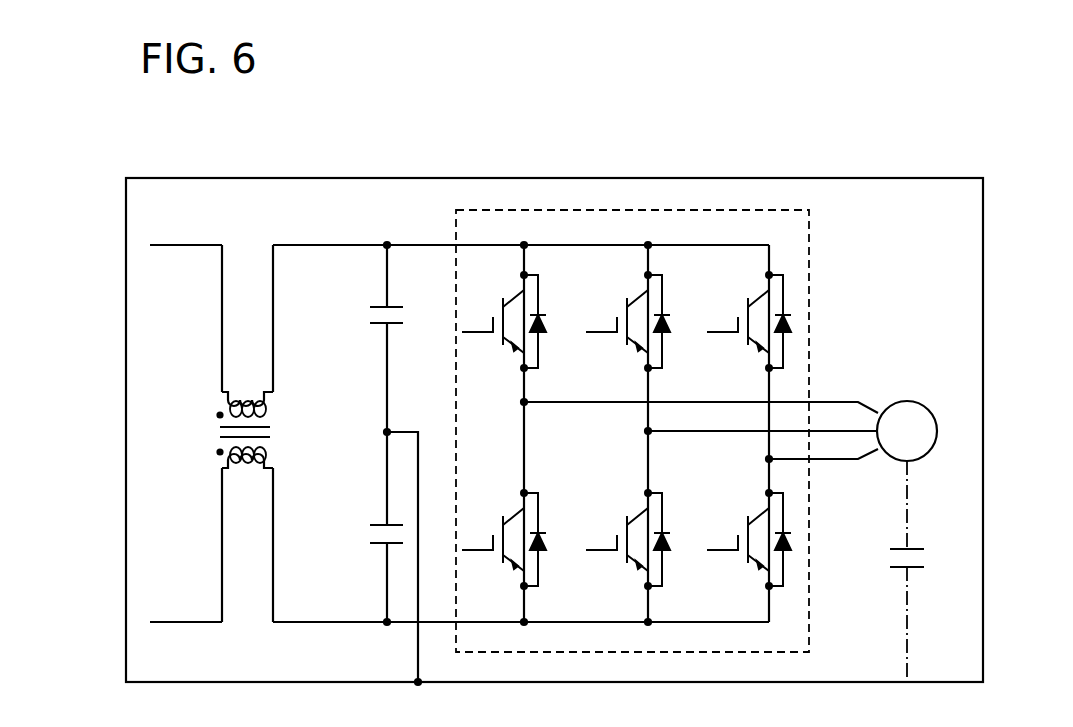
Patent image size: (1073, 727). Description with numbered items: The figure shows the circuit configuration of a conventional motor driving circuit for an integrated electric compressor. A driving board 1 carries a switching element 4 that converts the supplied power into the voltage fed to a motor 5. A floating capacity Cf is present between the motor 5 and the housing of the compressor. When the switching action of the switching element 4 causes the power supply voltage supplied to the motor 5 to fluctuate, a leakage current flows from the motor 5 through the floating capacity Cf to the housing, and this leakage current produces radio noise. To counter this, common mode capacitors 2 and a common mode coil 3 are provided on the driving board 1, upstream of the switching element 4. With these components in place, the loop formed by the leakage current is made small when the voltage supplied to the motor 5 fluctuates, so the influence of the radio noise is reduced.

The driving board 1 is at (875, 210).
The common mode capacitors 2 is at (373, 313).
The common mode coil 3 is at (220, 437).
The switching element 4 is at (710, 210).
The motor 5 is at (937, 432).
The floating capacity Cf is at (922, 549).